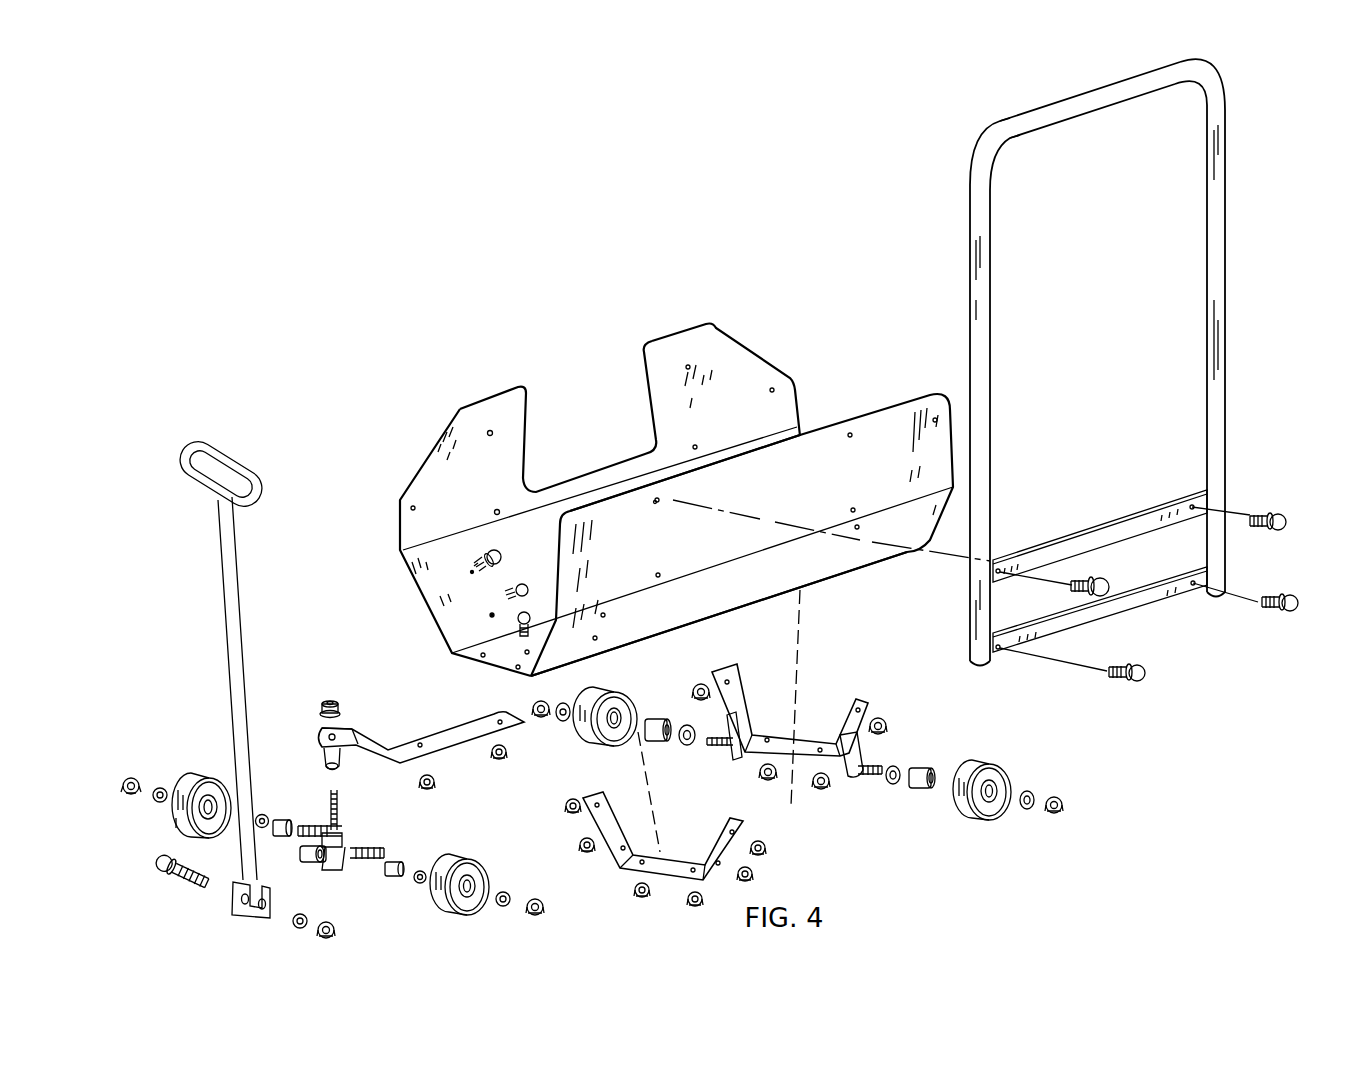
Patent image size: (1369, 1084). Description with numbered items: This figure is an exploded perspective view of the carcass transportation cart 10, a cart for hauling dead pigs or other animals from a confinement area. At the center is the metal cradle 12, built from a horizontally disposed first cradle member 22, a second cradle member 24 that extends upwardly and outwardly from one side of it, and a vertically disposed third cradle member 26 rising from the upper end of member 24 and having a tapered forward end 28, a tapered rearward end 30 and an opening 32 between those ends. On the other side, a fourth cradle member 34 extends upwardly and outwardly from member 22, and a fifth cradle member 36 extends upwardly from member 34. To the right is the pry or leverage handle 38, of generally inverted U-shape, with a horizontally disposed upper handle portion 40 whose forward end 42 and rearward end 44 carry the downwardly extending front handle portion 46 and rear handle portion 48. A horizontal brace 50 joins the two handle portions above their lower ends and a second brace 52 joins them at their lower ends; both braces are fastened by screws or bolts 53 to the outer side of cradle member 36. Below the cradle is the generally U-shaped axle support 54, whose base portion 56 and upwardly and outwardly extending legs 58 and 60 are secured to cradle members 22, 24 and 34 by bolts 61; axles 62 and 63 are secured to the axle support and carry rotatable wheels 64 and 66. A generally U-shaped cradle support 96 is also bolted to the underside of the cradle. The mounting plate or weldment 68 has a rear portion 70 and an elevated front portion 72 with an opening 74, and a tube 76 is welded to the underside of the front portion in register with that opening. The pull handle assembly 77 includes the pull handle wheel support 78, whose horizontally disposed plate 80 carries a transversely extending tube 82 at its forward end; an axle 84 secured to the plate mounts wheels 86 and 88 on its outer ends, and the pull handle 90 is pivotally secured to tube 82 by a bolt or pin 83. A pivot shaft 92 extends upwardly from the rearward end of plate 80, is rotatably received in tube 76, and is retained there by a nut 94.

The carcass transportation cart 10 is at (626, 310).
The metal cradle 12 is at (378, 513).
The first cradle member 22 is at (497, 648).
The second cradle member 24 is at (454, 612).
The third cradle member 26 is at (460, 506).
The tapered forward end 28 is at (425, 457).
The tapered rearward end 30 is at (760, 348).
The opening 32 is at (603, 422).
The fourth cradle member 34 is at (727, 587).
The fifth cradle member 36 is at (792, 493).
The pry or leverage handle 38 is at (1040, 88).
The upper handle portion 40 is at (1030, 115).
The forward end 42 is at (985, 135).
The rearward end 44 is at (1195, 65).
The front handle portion 46 is at (990, 328).
The rear handle portion 48 is at (1212, 295).
The brace 50 is at (1138, 512).
The brace 52 is at (1130, 605).
The screws or bolts 53 is at (1272, 510).
The axle support 54 is at (850, 685).
The base portion 56 is at (712, 819).
The leg 58 is at (737, 712).
The leg 60 is at (866, 710).
The bolts 61 is at (497, 548).
The axle 62 is at (714, 748).
The axle 63 is at (880, 760).
The wheel 64 is at (620, 700).
The wheel 66 is at (1003, 762).
The mounting plate or weldment 68 is at (478, 758).
The rear portion 70 is at (524, 718).
The elevated front portion 72 is at (320, 735).
The opening 74 is at (338, 733).
The tube 76 is at (346, 762).
The pull handle assembly 77 is at (198, 609).
The pull handle wheel support 78 is at (378, 836).
The plate 80 is at (342, 867).
The tube 82 is at (312, 873).
The bolt or pin 83 is at (185, 887).
The axle 84 is at (358, 846).
The wheel 86 is at (200, 777).
The wheel 88 is at (490, 863).
The pull handle 90 is at (236, 580).
The pivot shaft 92 is at (330, 810).
The nut 94 is at (322, 700).
The cradle support 96 is at (727, 852).